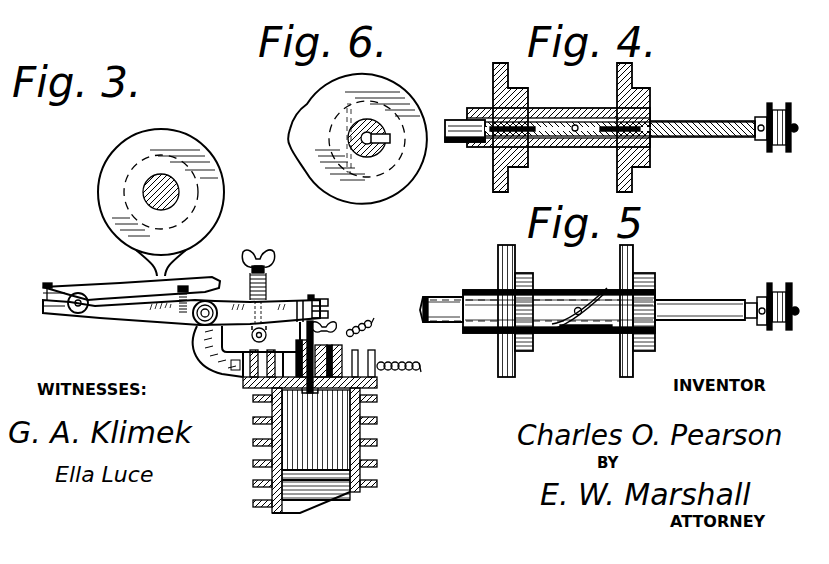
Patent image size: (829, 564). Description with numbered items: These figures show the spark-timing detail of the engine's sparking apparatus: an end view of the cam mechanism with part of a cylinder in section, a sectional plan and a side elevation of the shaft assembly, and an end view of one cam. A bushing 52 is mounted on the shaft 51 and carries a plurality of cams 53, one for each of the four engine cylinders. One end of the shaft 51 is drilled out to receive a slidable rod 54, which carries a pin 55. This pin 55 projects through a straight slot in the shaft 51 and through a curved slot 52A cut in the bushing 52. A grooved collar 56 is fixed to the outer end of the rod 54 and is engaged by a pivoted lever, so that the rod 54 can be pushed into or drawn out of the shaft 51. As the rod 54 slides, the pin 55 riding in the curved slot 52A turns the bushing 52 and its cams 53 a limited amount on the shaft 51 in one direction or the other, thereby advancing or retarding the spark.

In FIG. 4, the shaft 51 is at (460, 142).
In FIG. 5, the shaft 51 is at (697, 308).
In FIG. 4, the bushing 52 is at (566, 110).
In FIG. 5, the bushing 52 is at (552, 298).
In FIG. 5, the curved slot 52A is at (553, 335).
In FIG. 3, the cam 53 is at (216, 211).
In FIG. 6, the cam 53 is at (346, 200).
In FIG. 4, the cam 53 is at (509, 84).
In FIG. 5, the cam 53 is at (506, 278).
In FIG. 6, the slidable rod 54 is at (352, 128).
In FIG. 4, the slidable rod 54 is at (697, 125).
In FIG. 5, the slidable rod 54 is at (752, 319).
In FIG. 6, the pin 55 is at (386, 148).
In FIG. 4, the pin 55 is at (574, 147).
In FIG. 5, the pin 55 is at (586, 331).
In FIG. 4, the grooved collar 56 is at (781, 98).
In FIG. 5, the grooved collar 56 is at (779, 283).